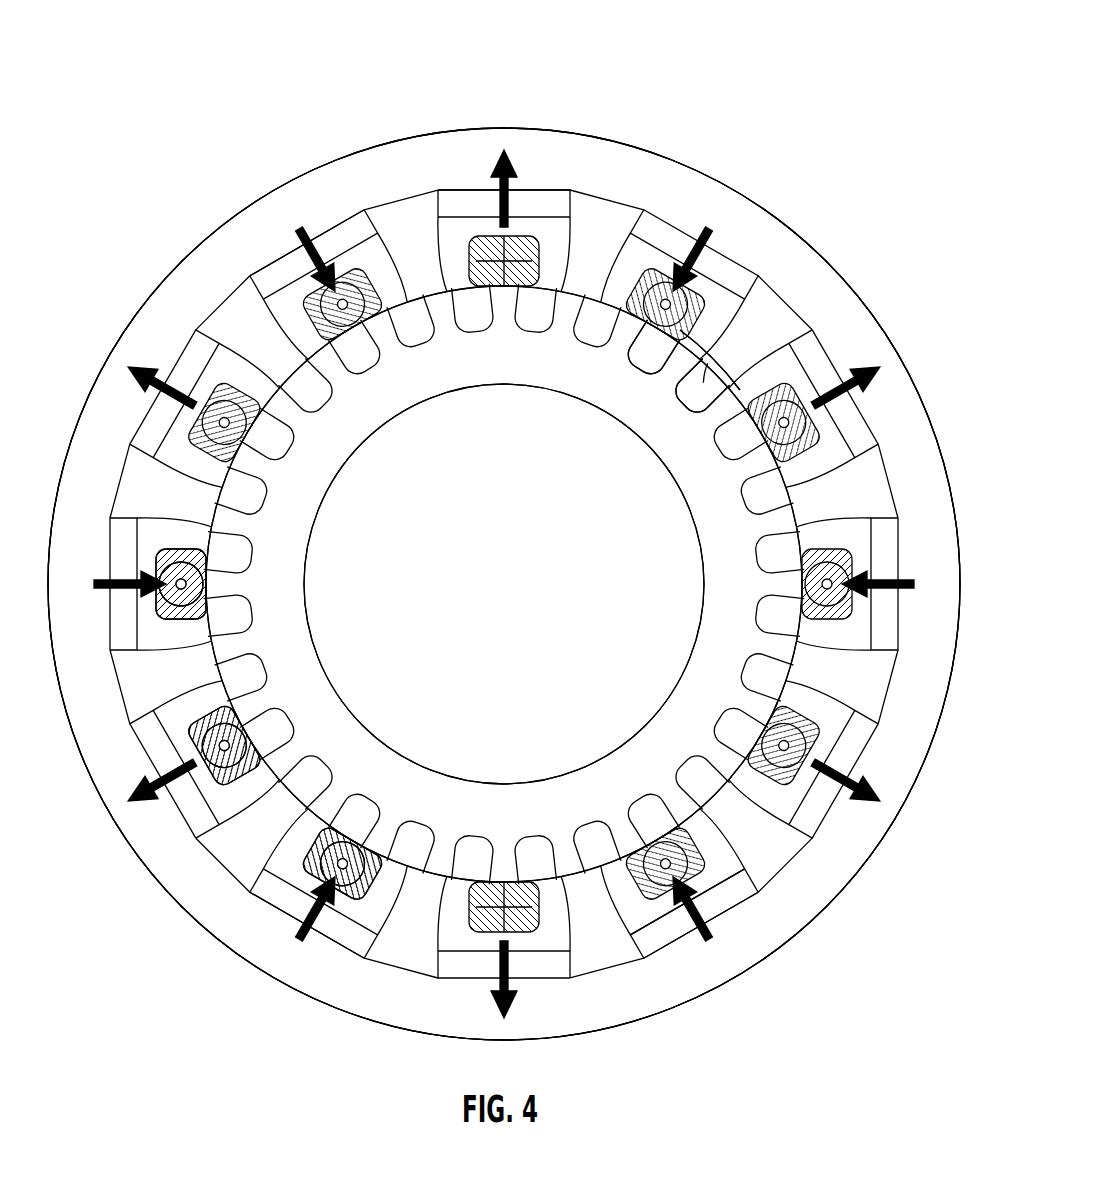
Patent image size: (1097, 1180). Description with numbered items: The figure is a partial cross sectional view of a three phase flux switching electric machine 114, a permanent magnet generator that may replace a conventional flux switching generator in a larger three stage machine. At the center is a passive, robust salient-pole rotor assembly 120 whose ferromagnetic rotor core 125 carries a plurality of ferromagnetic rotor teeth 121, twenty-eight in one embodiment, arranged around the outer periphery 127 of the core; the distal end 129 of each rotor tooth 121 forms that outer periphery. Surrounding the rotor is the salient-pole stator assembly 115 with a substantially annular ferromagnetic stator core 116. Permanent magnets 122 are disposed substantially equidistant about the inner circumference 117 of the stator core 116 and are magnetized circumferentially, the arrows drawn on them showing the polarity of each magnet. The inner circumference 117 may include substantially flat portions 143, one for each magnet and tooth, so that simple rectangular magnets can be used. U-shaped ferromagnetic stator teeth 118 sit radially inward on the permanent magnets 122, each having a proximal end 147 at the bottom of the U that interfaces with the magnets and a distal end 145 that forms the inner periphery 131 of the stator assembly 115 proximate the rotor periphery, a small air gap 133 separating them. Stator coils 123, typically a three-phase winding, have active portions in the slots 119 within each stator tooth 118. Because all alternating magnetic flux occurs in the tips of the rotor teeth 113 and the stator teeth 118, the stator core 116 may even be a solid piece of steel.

The rotor teeth tips 113 is at (563, 315).
The three phase flux switching electric machine 114 is at (731, 60).
The stator assembly 115 is at (893, 345).
The stator core 116 is at (832, 903).
The inner circumference of the stator core 117 is at (612, 965).
The stator teeth 118 is at (613, 235).
The slots 119 is at (170, 557).
The rotor assembly 120 is at (650, 690).
The rotor teeth 121 is at (383, 330).
The permanent magnets 122 is at (441, 200).
The stator coils 123 is at (325, 868).
The rotor core 125 is at (715, 537).
The outer periphery of the rotor core 127 is at (703, 375).
The distal end of rotor tooth 129 is at (688, 353).
The inner periphery of the stator assembly 131 is at (725, 370).
The air gap 133 is at (713, 358).
The substantially flat portions 143 is at (273, 910).
The distal end of stator tooth 145 is at (698, 350).
The proximal end of stator tooth 147 is at (358, 930).